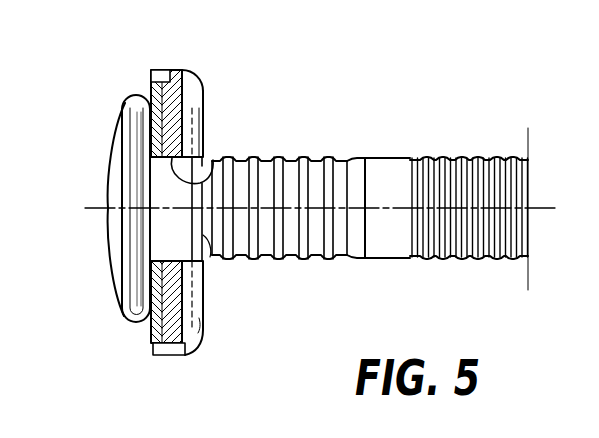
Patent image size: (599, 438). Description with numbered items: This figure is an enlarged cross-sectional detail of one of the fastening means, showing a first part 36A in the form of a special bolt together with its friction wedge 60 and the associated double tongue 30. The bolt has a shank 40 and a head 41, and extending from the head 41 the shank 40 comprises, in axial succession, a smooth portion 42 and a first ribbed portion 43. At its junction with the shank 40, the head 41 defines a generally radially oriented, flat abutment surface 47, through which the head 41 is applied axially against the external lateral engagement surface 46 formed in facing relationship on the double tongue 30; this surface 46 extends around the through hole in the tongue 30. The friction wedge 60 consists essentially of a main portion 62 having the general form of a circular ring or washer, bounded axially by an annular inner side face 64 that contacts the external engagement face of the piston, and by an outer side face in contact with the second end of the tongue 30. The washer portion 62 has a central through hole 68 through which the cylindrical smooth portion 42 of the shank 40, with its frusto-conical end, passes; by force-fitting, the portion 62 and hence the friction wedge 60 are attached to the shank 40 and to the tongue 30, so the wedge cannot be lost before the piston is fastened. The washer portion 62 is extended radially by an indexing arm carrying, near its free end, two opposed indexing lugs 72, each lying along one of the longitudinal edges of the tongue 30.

The double tongue 30 is at (163, 356).
The first part 36A is at (428, 150).
The shank 40 is at (347, 152).
The head 41 is at (147, 143).
The smooth portion 42 is at (175, 201).
The first ribbed portion 43 is at (315, 238).
The external lateral engagement surface 46 is at (150, 89).
The abutment surface 47 is at (203, 105).
The friction wedge 60 is at (214, 121).
The main portion 62 is at (178, 356).
The annular inner side face 64 is at (187, 308).
The central through hole 68 is at (195, 182).
The indexing lugs 72 is at (160, 72).